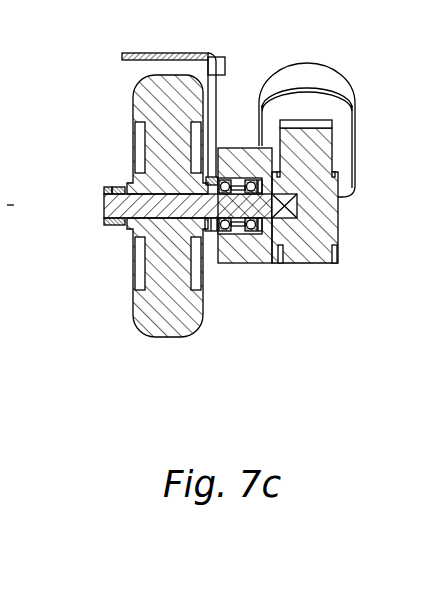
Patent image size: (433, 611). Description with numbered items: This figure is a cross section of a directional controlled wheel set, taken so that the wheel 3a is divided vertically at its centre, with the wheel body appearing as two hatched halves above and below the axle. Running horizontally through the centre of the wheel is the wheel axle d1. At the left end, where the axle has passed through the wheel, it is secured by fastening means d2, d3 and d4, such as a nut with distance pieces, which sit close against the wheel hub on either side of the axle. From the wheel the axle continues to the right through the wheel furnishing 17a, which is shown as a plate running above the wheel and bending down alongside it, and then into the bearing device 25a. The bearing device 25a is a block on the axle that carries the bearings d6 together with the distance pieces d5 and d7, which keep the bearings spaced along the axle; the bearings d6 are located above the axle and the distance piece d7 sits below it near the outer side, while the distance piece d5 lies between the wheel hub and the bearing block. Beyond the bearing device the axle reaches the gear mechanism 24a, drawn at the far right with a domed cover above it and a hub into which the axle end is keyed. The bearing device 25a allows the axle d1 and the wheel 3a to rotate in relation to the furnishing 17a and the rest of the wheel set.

The wheel 3a is at (122, 187).
The wheel furnishing 17a is at (155, 102).
The wheel axle d1 is at (154, 214).
The fastening means d2 is at (74, 150).
The fastening means d3 is at (81, 135).
The fastening means d4 is at (82, 245).
The distance piece d5 is at (184, 292).
The bearings d6 is at (228, 106).
The distance piece d7 is at (239, 292).
The gear mechanism 24a is at (307, 214).
The bearing device 25a is at (228, 274).